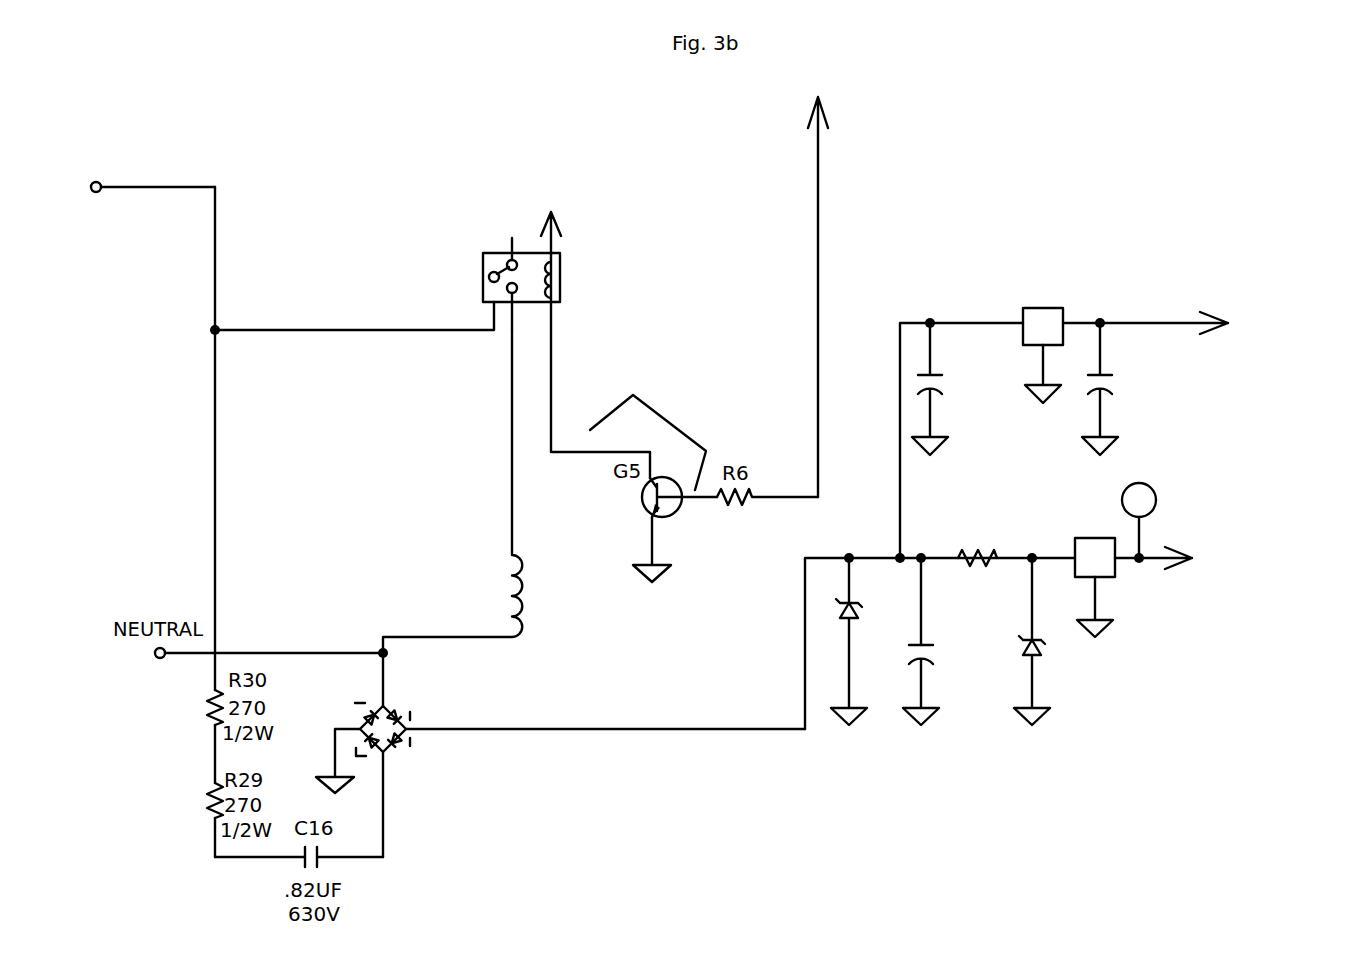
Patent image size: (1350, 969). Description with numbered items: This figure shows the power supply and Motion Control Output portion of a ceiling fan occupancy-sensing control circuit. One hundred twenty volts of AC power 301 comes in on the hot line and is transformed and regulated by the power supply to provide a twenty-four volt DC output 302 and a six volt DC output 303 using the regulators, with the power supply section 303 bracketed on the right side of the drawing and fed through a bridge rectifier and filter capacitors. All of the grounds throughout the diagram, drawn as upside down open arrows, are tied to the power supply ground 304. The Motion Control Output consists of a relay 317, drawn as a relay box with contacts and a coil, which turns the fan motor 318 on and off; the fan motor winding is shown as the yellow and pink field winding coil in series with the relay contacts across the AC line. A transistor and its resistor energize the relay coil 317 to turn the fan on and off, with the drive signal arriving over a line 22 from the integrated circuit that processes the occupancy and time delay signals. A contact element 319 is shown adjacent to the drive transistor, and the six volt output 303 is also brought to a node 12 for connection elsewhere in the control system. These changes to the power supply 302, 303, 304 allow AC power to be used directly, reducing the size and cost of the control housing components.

The 120 volts of AC power 301 is at (137, 187).
The relay 317 is at (560, 277).
The switch contact element 319 is at (673, 425).
The control signal line 22 is at (839, 297).
The fan motor 318 is at (688, 618).
The 24 volts DC output 302 is at (383, 685).
The power supply ground 304 is at (340, 790).
The 6 volts DC output 303 is at (1070, 507).
The connection node 12 is at (1139, 520).